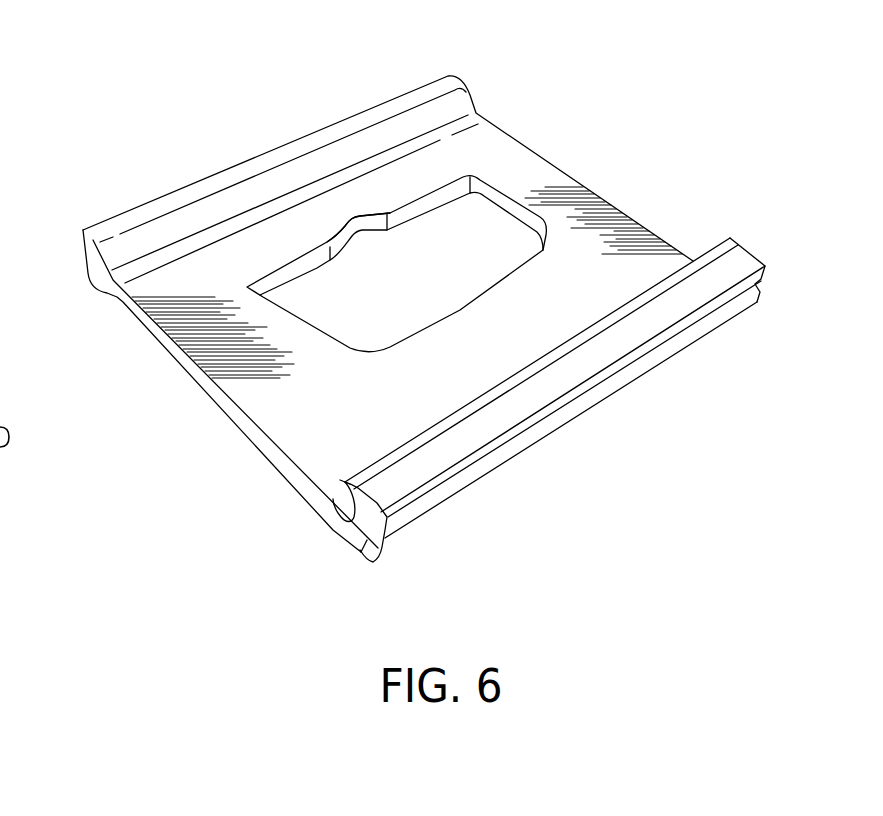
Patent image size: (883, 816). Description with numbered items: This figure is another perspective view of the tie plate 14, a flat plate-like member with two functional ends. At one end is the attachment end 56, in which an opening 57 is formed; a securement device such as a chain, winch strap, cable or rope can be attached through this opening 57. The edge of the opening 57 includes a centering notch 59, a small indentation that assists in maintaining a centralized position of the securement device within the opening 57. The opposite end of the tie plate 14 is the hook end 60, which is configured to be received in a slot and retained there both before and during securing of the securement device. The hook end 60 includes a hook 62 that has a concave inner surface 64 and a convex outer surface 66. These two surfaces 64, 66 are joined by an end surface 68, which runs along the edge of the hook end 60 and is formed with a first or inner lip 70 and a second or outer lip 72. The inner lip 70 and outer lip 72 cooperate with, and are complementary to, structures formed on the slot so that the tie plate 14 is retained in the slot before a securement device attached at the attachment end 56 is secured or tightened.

The tie plate 14 is at (600, 158).
The attachment end 56 is at (168, 272).
The opening 57 is at (510, 207).
The centering notch 59 is at (350, 223).
The hook end 60 is at (697, 233).
The hook 62 is at (367, 532).
The concave inner surface 64 is at (343, 505).
The convex outer surface 66 is at (378, 560).
The end surface 68 is at (561, 400).
The inner lip 70 is at (345, 482).
The outer lip 72 is at (762, 262).